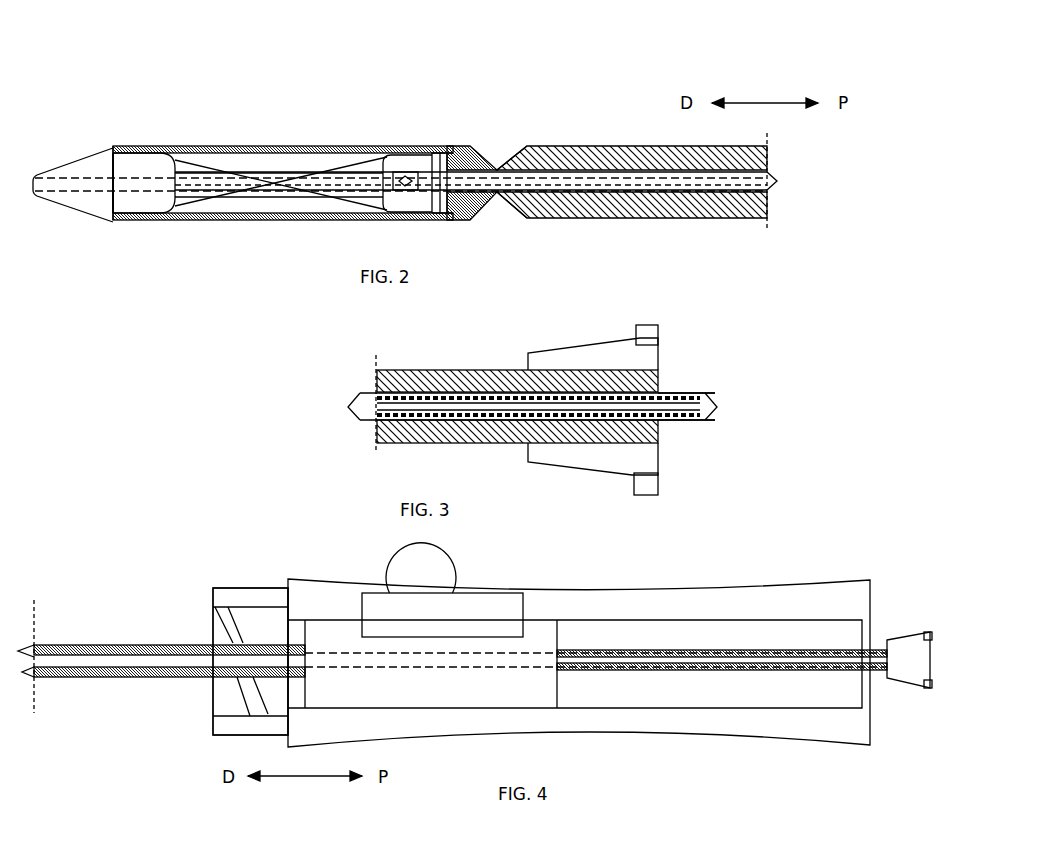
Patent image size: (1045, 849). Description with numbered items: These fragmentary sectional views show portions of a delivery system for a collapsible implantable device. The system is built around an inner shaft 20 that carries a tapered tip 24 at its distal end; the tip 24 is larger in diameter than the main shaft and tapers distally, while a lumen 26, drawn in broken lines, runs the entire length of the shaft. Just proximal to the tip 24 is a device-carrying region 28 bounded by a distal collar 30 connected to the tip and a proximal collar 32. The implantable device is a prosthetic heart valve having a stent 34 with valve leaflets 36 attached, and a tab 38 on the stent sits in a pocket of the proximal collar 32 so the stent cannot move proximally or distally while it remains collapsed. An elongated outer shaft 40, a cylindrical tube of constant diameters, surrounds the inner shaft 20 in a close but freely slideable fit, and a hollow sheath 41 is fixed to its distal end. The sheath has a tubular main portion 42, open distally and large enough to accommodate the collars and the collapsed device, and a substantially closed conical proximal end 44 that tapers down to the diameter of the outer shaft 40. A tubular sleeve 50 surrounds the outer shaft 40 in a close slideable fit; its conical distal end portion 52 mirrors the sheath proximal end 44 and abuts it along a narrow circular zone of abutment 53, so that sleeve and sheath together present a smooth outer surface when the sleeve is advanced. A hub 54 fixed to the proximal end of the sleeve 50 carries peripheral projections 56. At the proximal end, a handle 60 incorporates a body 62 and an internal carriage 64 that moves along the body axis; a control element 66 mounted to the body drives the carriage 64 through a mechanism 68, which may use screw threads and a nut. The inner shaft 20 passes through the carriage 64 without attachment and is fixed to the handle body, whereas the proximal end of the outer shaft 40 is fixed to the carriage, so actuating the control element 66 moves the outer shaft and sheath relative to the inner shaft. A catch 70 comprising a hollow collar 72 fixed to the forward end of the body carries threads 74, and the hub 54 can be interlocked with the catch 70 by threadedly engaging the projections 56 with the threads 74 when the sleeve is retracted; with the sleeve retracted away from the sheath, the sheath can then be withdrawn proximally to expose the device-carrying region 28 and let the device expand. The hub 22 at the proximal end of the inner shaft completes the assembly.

In FIG. 2, the inner shaft 20 is at (438, 146).
In FIG. 3, the inner shaft 20 is at (700, 408).
In FIG. 4, the inner shaft 20 is at (676, 650).
In FIG. 4, the hub 22 is at (915, 683).
In FIG. 2, the tip 24 is at (100, 222).
In FIG. 2, the lumen 26 is at (537, 185).
In FIG. 3, the lumen 26 is at (558, 444).
In FIG. 4, the lumen 26 is at (625, 672).
In FIG. 2, the device-carrying region 28 is at (268, 221).
In FIG. 2, the distal collar 30 is at (145, 222).
In FIG. 2, the proximal collar 32 is at (408, 198).
In FIG. 2, the stent 34 is at (297, 146).
In FIG. 2, the valve leaflets 36 is at (245, 152).
In FIG. 2, the tab 38 is at (413, 146).
In FIG. 2, the outer shaft 40 is at (550, 146).
In FIG. 3, the outer shaft 40 is at (677, 392).
In FIG. 4, the outer shaft 40 is at (122, 645).
In FIG. 2, the sheath 41 is at (226, 118).
In FIG. 2, the main portion 42 is at (238, 146).
In FIG. 2, the proximal end 44 is at (470, 146).
In FIG. 2, the sleeve 50 is at (622, 146).
In FIG. 3, the sleeve 50 is at (418, 370).
In FIG. 2, the distal end portion 52 is at (512, 146).
In FIG. 2, the zone of abutment 53 is at (512, 221).
In FIG. 3, the hub 54 is at (627, 338).
In FIG. 3, the projections 56 is at (655, 325).
In FIG. 4, the handle 60 is at (735, 584).
In FIG. 4, the body 62 is at (663, 600).
In FIG. 4, the carriage 64 is at (520, 678).
In FIG. 4, the control element 66 is at (420, 555).
In FIG. 4, the mechanism 68 is at (377, 613).
In FIG. 4, the catch 70 is at (198, 594).
In FIG. 4, the collar 72 is at (217, 720).
In FIG. 4, the threads 74 is at (250, 705).